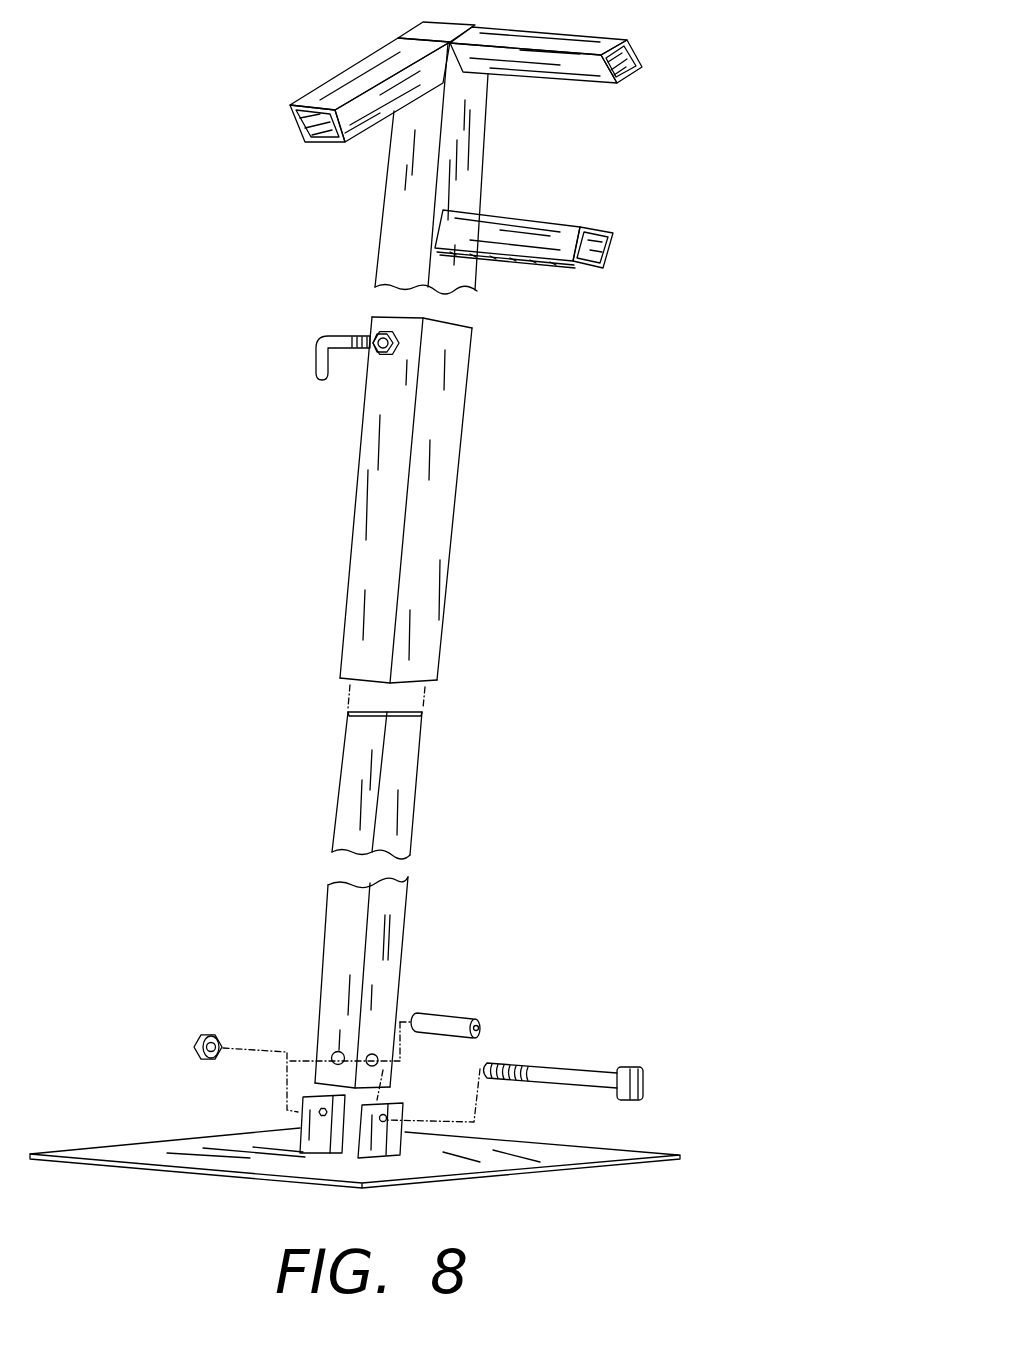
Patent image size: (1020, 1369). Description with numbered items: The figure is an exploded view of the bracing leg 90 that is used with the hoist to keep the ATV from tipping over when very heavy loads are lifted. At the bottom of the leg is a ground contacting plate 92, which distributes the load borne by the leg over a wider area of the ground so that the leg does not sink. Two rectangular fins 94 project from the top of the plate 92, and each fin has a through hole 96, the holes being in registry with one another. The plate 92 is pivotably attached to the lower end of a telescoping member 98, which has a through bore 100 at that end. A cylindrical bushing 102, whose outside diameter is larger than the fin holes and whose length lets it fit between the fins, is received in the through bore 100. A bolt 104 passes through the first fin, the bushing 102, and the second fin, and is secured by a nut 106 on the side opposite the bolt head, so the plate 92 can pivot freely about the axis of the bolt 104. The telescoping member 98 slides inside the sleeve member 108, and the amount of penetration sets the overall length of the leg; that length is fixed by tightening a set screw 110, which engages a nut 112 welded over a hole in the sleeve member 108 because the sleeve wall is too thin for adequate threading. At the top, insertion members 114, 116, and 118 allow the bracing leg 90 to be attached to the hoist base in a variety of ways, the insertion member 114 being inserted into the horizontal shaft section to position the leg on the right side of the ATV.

The bracing leg 90 is at (533, 533).
The ground contacting plate 92 is at (640, 1152).
The rectangular fins 94 is at (403, 1100).
The through hole 96 is at (325, 1114).
The telescoping member 98 is at (393, 950).
The through bore 100 is at (373, 1050).
The cylindrical bushing 102 is at (480, 1015).
The bolt 104 is at (582, 1072).
The nut 106 is at (215, 1035).
The sleeve member 108 is at (355, 540).
The set screw 110 is at (316, 360).
The nut 112 is at (400, 333).
The insertion member 114 is at (600, 40).
The insertion member 116 is at (360, 128).
The insertion member 118 is at (570, 224).